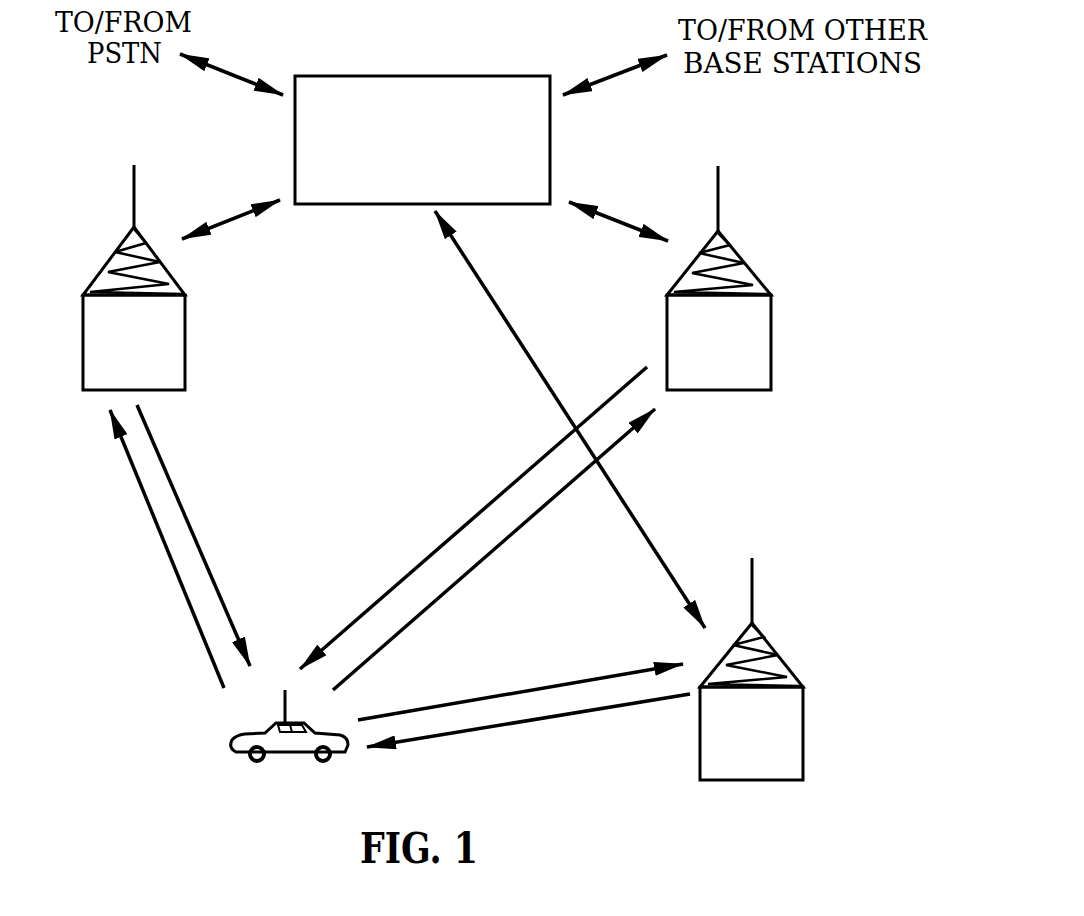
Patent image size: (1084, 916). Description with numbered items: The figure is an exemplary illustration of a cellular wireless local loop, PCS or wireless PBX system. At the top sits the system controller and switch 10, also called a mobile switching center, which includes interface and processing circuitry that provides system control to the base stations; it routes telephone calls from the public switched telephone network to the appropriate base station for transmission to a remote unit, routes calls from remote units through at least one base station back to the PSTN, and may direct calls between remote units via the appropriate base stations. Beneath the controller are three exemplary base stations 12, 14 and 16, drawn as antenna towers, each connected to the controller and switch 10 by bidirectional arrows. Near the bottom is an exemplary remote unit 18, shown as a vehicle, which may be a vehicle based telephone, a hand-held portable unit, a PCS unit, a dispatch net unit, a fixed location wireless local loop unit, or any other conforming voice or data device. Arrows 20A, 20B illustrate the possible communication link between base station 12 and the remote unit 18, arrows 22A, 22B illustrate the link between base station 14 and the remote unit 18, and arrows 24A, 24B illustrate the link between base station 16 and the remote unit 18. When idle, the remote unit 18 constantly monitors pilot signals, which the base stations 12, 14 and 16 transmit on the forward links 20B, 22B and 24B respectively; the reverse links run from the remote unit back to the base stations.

The system controller and switch 10 is at (470, 76).
The base station 12 is at (113, 257).
The base station 14 is at (742, 258).
The base station 16 is at (775, 650).
The remote unit 18 is at (302, 762).
The arrow 20A is at (164, 543).
The communication link 20B is at (206, 567).
The arrow 22A is at (475, 567).
The communication link 22B is at (437, 548).
The arrow 24A is at (455, 702).
The communication link 24B is at (473, 730).